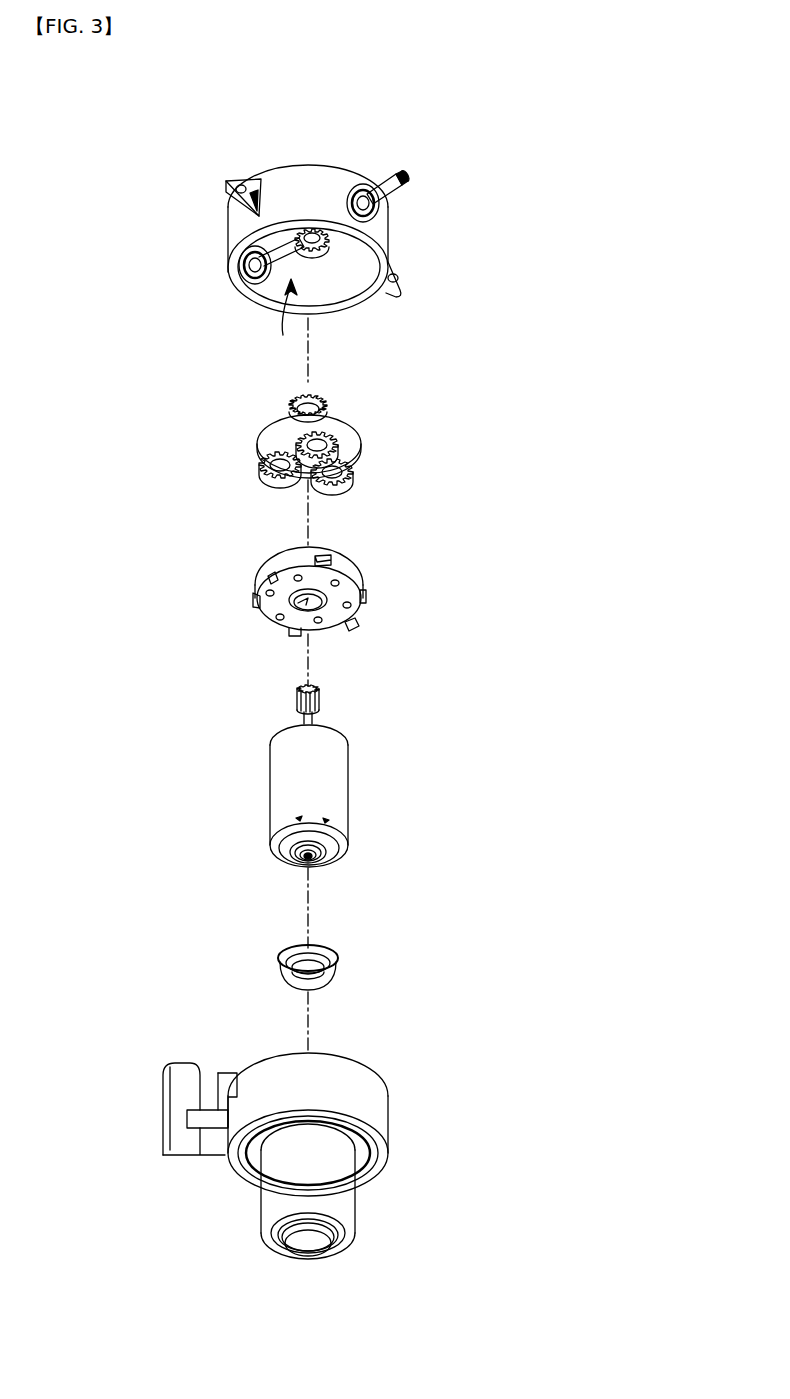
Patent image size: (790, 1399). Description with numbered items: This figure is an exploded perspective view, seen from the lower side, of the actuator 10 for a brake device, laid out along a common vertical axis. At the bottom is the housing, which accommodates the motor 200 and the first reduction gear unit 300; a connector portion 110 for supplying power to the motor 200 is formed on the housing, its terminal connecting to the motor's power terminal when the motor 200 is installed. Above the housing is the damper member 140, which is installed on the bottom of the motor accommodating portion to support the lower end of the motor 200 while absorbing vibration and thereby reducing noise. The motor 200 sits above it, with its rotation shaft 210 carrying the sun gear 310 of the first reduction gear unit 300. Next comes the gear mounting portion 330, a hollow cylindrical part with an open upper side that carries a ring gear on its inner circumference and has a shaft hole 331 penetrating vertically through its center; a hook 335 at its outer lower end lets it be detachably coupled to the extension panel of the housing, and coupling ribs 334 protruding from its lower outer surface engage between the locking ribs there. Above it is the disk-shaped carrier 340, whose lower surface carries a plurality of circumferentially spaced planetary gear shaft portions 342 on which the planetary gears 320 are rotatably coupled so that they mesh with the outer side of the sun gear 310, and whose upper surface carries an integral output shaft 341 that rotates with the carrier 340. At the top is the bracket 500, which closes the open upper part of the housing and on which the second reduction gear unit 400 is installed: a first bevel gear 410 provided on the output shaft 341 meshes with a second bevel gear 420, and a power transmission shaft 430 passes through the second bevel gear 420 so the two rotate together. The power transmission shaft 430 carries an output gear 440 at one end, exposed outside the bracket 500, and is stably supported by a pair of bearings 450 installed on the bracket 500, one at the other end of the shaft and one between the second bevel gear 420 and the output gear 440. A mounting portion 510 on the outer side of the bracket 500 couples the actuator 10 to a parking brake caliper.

The actuator 10 is at (555, 642).
The connector portion 110 is at (165, 1130).
The damper member 140 is at (338, 960).
The motor 200 is at (348, 783).
The rotation shaft 210 is at (315, 720).
The first reduction gear unit 300 is at (253, 633).
The sun gear 310 is at (322, 700).
The planetary gears 320 is at (262, 463).
The gear mounting portion 330 is at (307, 605).
The shaft hole 331 is at (354, 628).
The coupling ribs 334 is at (333, 562).
The hook 335 is at (366, 597).
The carrier 340 is at (305, 448).
The output shaft 341 is at (293, 411).
The planetary gear shaft portion 342 is at (345, 474).
The second reduction gear unit 400 is at (277, 319).
The first bevel gear 410 is at (327, 405).
The second bevel gear 420 is at (384, 258).
The power transmission shaft 430 is at (384, 186).
The output gear 440 is at (412, 180).
The bearing 450 is at (380, 215).
The bracket 500 is at (310, 165).
The mounting portion 510 is at (228, 188).